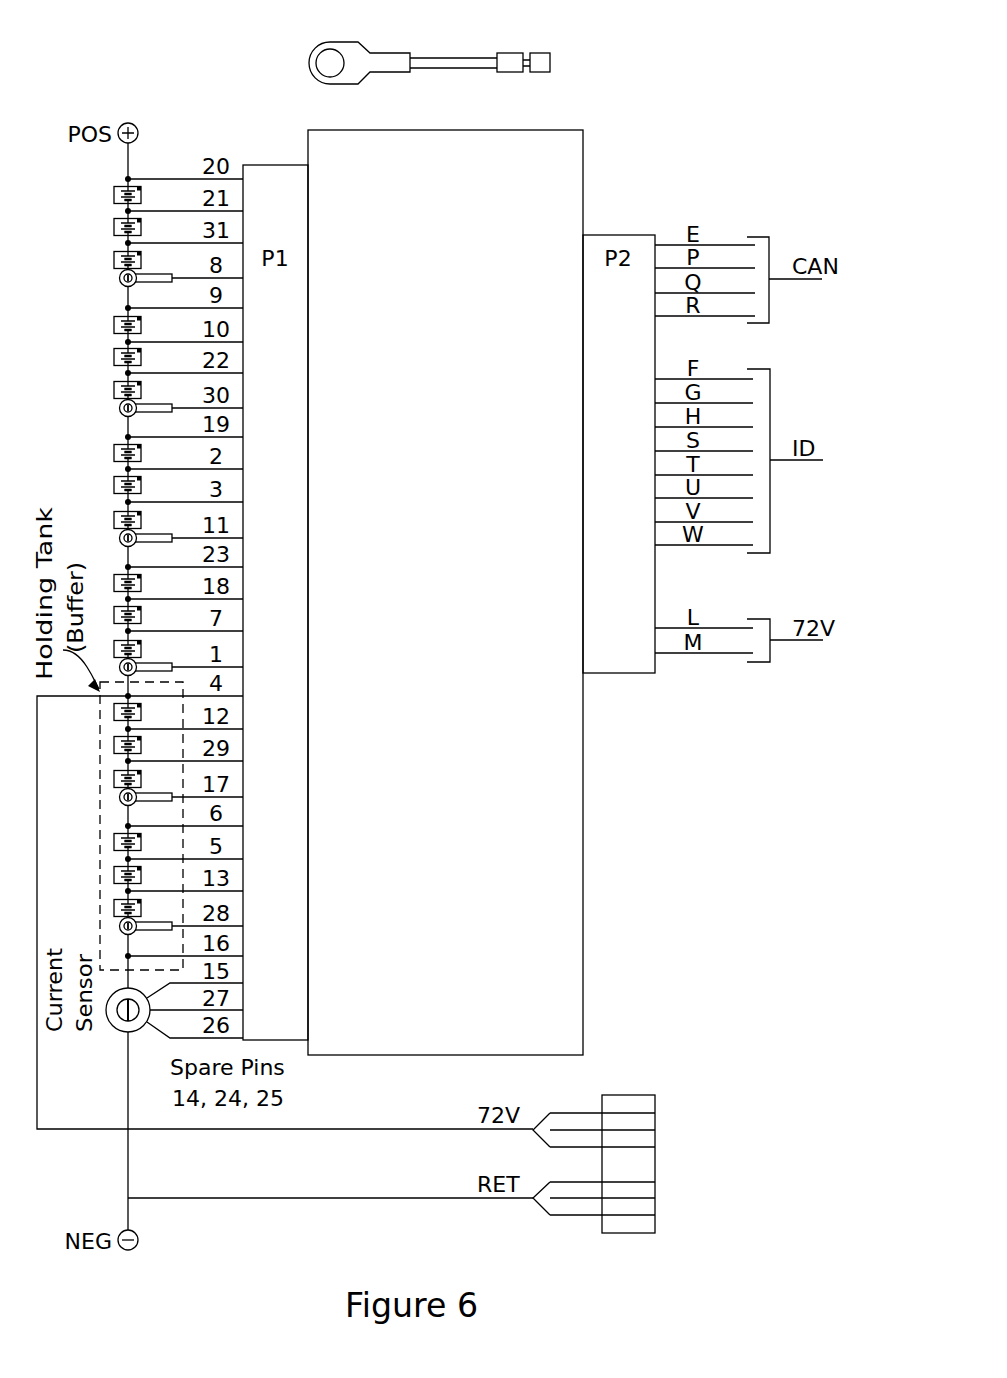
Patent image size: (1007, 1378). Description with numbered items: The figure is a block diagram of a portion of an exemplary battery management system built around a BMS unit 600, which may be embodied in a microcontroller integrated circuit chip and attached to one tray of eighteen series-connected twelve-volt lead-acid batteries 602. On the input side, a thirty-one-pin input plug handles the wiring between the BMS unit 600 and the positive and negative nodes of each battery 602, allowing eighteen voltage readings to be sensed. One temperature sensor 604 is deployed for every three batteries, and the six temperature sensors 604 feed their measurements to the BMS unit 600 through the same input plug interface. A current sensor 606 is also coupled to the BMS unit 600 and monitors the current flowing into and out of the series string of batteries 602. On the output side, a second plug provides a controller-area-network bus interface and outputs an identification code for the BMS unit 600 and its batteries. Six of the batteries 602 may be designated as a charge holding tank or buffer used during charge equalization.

The BMS unit 600 is at (445, 592).
The lead-acid battery 602 is at (114, 228).
The temperature sensor 604 is at (311, 53).
The current sensor 606 is at (118, 1033).